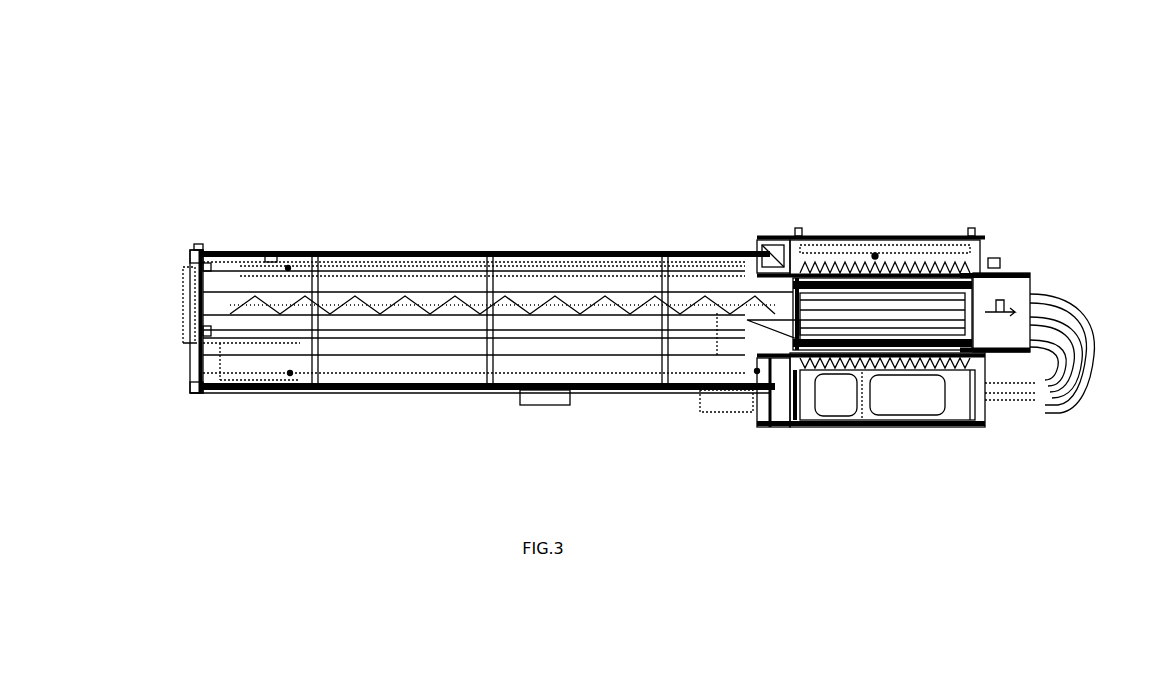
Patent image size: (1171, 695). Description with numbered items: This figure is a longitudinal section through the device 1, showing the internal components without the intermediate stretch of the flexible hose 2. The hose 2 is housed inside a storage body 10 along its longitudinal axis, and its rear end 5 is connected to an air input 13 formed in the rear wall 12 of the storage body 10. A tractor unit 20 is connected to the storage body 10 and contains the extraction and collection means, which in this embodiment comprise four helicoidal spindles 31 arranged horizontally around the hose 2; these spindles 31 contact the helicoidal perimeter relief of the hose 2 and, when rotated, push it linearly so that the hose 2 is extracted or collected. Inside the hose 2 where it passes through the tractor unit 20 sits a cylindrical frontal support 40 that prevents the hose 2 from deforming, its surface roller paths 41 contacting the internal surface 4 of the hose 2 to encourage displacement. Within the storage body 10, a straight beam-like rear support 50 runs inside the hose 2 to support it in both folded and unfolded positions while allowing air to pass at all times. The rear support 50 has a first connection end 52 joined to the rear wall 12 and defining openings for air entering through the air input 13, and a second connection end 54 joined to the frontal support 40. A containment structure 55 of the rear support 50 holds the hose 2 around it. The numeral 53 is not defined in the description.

The device 1 is at (355, 112).
The flexible hose 2 is at (270, 258).
The internal surface 4 is at (1032, 277).
The rear end 5 is at (186, 352).
The storage body 10 is at (395, 253).
The rear wall 12 is at (178, 395).
The air input 13 is at (185, 262).
The tractor unit 20 is at (858, 235).
The helicoidal spindles 31 is at (830, 237).
The frontal support 40 is at (985, 425).
The surface roller paths 41 is at (853, 427).
The rear support 50 is at (412, 390).
The first connection end 52 is at (200, 250).
The bearing 53 is at (196, 250).
The second connection end 54 is at (757, 237).
The containment structure 55 is at (378, 262).